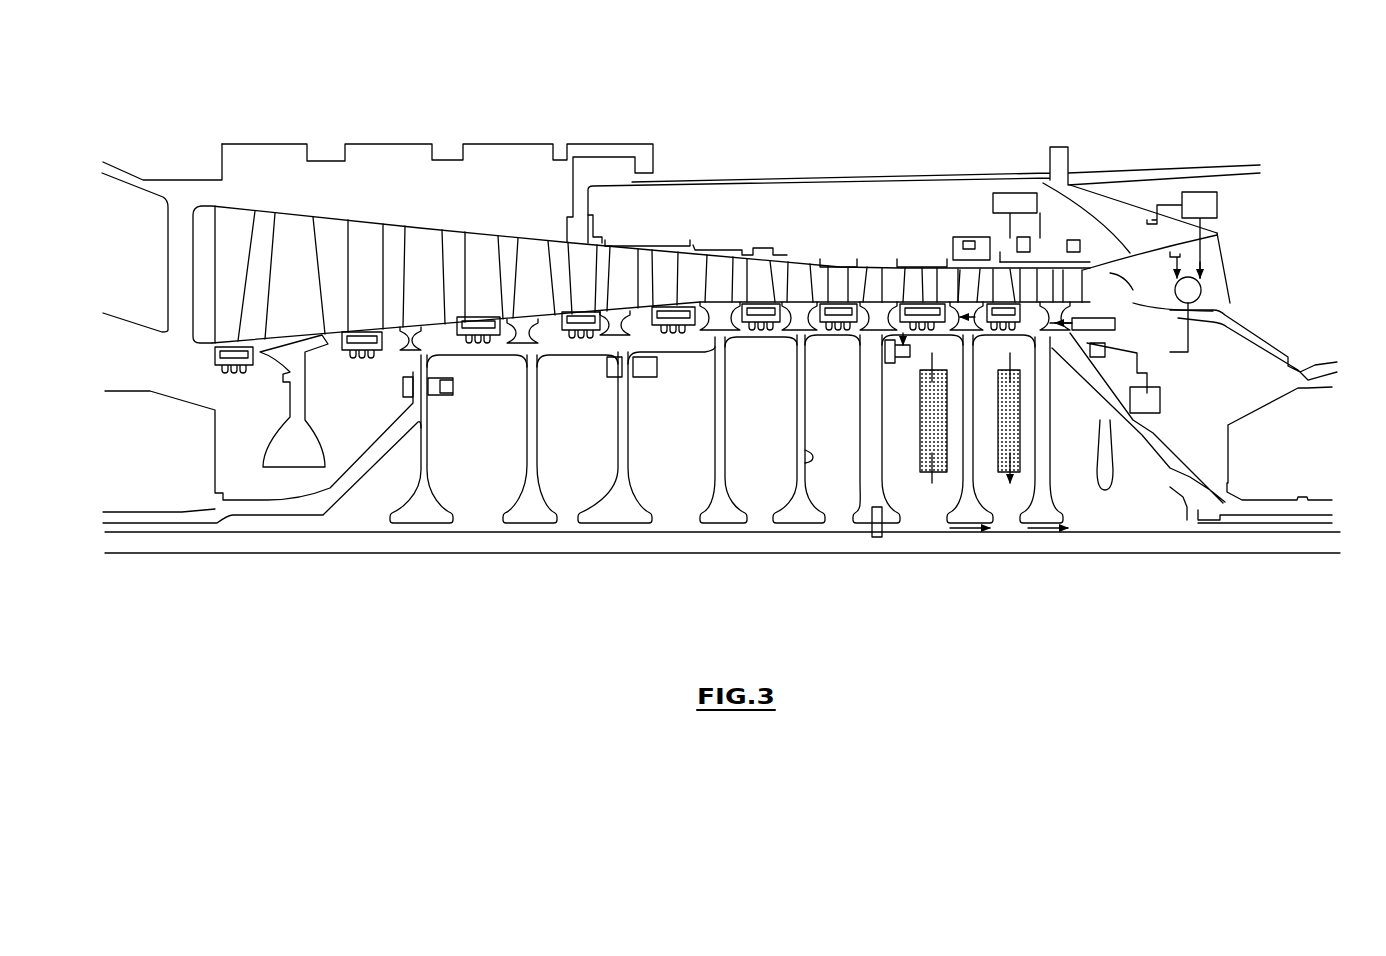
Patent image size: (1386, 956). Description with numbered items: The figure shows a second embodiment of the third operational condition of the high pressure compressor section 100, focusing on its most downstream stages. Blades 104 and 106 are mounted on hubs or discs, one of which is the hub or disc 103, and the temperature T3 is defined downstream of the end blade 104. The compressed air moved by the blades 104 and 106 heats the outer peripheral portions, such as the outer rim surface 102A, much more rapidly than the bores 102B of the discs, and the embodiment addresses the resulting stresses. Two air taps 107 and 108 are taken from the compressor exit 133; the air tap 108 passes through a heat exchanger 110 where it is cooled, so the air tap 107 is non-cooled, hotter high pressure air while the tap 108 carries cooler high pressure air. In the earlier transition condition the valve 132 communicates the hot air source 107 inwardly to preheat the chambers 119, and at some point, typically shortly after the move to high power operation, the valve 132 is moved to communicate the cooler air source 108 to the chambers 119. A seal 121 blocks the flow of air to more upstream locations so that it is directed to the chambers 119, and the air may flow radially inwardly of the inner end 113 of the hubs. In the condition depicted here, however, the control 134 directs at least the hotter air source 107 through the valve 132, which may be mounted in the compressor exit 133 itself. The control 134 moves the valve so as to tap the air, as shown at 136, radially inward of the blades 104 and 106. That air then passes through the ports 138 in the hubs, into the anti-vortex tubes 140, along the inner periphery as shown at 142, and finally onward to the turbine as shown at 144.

The high pressure compressor section 100 is at (515, 105).
The outer rim surface 102A is at (1040, 330).
The bores 102B is at (1032, 455).
The hub or disc 103 is at (990, 333).
The end blade 104 is at (1020, 290).
The blade 106 is at (967, 287).
The air tap 107 is at (1148, 242).
The air tap 108 is at (1185, 258).
The heat exchanger 110 is at (1198, 192).
The inner end of the hubs 113 is at (1063, 520).
The chambers 119 is at (903, 457).
The seal 121 is at (873, 532).
The valve 132 is at (1202, 287).
The compressor exit 133 is at (1217, 237).
The control 134 is at (1147, 383).
The air tap location 136 is at (1122, 323).
The ports 138 is at (885, 340).
The anti-vortex tubes 140 is at (920, 410).
The inner periphery flow 142 is at (1047, 532).
The flow to turbine 144 is at (1175, 440).
The temperature T3 is at (1063, 297).